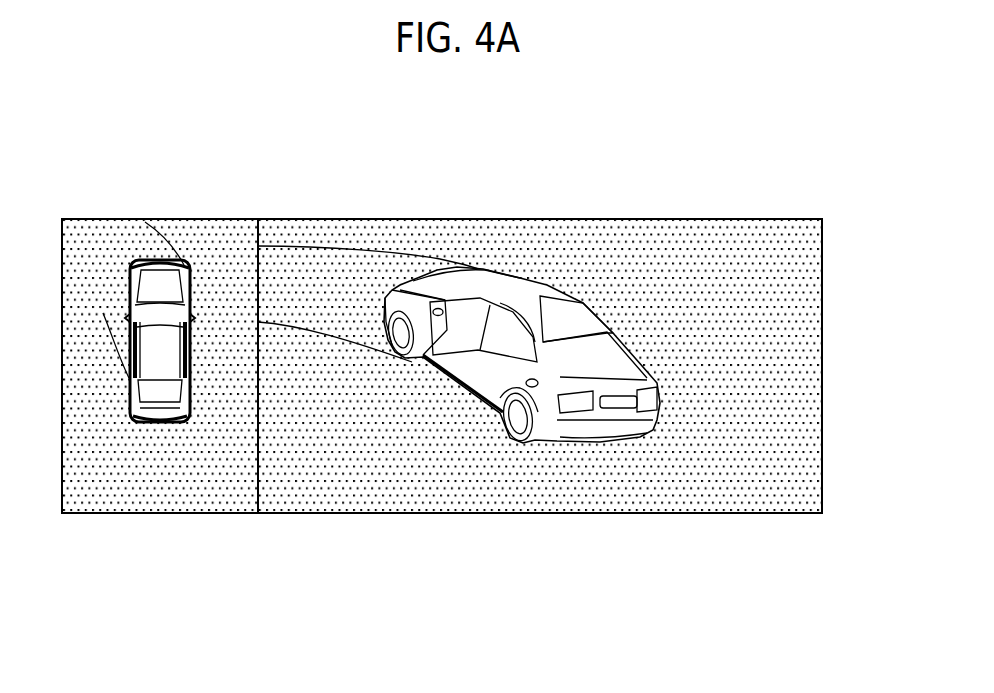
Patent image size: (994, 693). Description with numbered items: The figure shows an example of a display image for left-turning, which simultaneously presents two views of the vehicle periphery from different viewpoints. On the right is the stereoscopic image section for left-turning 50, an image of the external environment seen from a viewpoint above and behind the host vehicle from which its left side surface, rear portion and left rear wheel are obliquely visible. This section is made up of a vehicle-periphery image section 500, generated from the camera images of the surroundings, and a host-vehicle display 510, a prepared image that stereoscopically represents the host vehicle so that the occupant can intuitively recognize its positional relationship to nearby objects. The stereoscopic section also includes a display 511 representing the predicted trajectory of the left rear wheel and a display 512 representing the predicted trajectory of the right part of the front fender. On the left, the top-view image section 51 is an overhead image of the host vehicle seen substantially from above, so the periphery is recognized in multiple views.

The stereoscopic image section for left-turning 50 is at (537, 218).
The top-view image section 51 is at (157, 217).
The vehicle-periphery image section 500 is at (798, 367).
The host-vehicle display 510 is at (560, 318).
The display representing a predicted trajectory of the left rear wheel 511 is at (422, 358).
The display representing a predicted trajectory of the right part of the front fende 512 is at (404, 250).